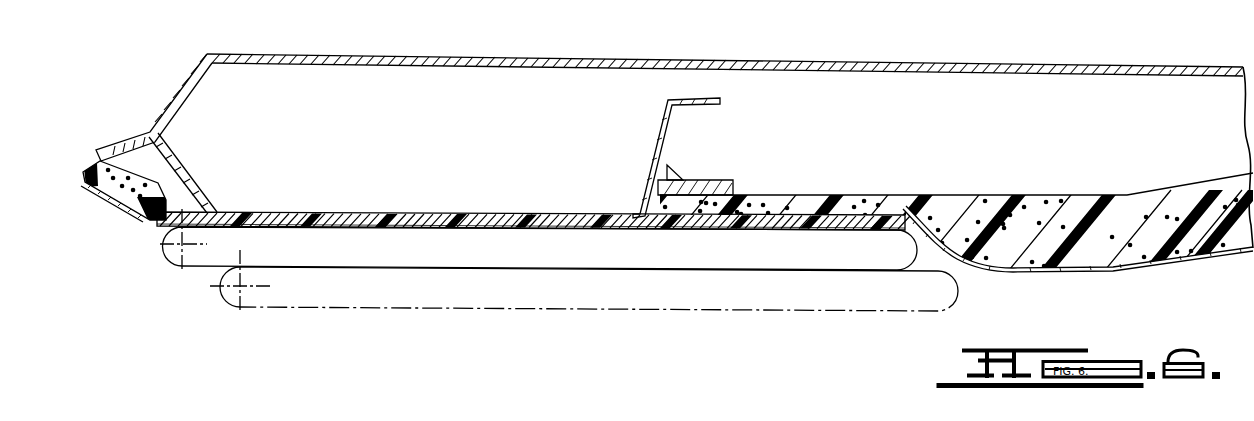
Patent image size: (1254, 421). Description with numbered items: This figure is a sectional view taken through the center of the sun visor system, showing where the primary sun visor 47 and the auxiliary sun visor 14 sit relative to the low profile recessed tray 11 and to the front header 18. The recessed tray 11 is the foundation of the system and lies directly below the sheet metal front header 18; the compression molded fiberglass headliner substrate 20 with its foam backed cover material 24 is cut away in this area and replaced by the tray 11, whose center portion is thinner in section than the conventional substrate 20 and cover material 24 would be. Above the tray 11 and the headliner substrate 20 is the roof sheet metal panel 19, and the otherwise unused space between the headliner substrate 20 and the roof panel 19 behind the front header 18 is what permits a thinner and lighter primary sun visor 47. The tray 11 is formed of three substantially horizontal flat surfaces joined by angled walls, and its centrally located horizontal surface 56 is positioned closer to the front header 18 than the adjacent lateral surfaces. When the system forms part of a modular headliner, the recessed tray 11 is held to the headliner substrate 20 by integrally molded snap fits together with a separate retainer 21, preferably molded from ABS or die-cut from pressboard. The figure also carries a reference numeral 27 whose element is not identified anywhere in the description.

The recessed tray 11 is at (146, 222).
The auxiliary sun visor 14 is at (673, 253).
The front header 18 is at (407, 212).
The roof sheet metal panel 19 is at (800, 58).
The headliner substrate 20 is at (97, 175).
The retainer 21 is at (716, 178).
The cover material 24 is at (100, 193).
The bracket 27 is at (667, 166).
The primary sun visor 47 is at (747, 293).
The centrally located horizontal surface 56 is at (534, 222).